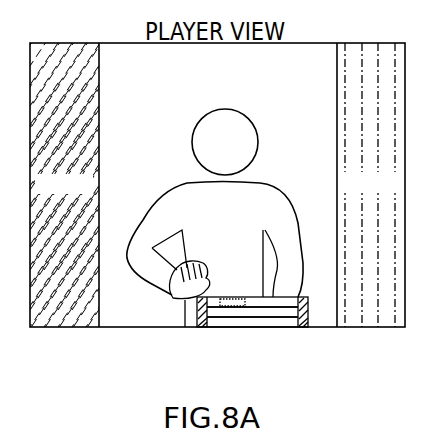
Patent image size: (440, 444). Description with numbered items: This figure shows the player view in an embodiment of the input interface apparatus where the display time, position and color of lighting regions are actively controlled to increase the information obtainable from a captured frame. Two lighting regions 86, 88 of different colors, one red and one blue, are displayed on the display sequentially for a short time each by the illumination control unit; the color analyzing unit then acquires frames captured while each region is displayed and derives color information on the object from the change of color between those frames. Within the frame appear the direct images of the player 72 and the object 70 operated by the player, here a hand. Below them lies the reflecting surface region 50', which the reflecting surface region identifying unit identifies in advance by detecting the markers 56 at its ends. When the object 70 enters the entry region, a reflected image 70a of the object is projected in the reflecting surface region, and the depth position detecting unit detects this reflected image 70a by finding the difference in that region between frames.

The lighting region 86 is at (101, 79).
The lighting region 88 is at (336, 78).
The player 72 is at (270, 197).
The object 70 is at (210, 265).
The reflected image 70a is at (227, 310).
The reflecting surface region 50' is at (252, 345).
The markers 56 is at (302, 328).